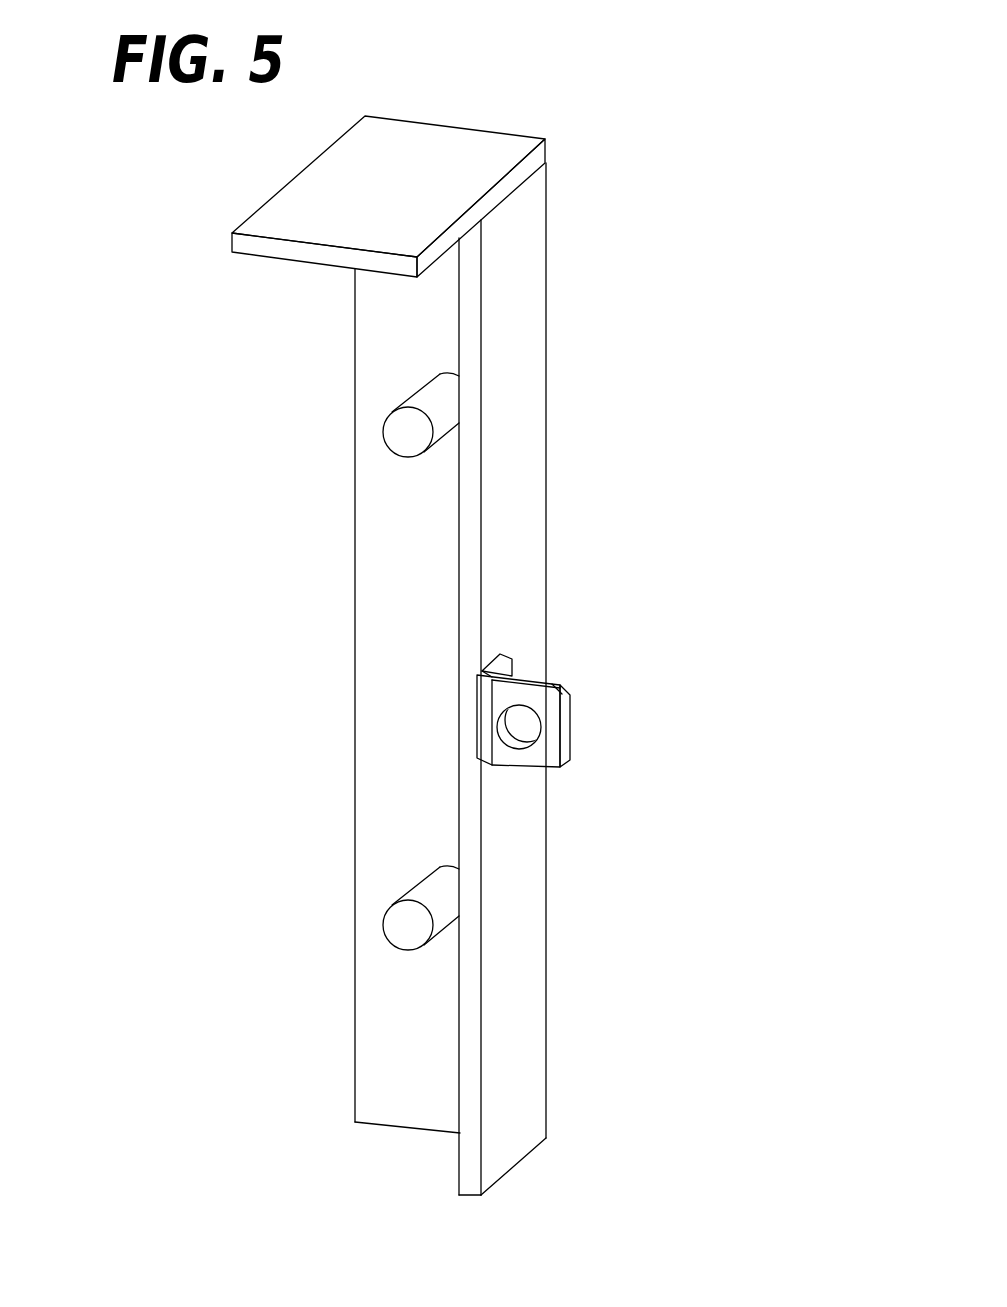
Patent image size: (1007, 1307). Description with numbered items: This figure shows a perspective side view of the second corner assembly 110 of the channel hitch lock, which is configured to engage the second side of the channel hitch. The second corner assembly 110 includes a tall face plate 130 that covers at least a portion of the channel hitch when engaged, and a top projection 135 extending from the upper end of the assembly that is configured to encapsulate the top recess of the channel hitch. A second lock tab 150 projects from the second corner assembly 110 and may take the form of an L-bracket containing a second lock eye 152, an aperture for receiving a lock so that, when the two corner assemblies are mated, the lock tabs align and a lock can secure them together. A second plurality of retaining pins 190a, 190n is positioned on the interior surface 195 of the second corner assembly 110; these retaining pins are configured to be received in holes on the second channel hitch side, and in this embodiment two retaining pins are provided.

The second corner assembly 110 is at (748, 88).
The top projection 135 is at (390, 162).
The face plate 130 is at (535, 520).
The interior surface 195 is at (429, 547).
The second lock tab 150 is at (590, 690).
The second lock eye 152 is at (538, 737).
The retaining pin 190a is at (392, 443).
The retaining pin 190n is at (384, 930).